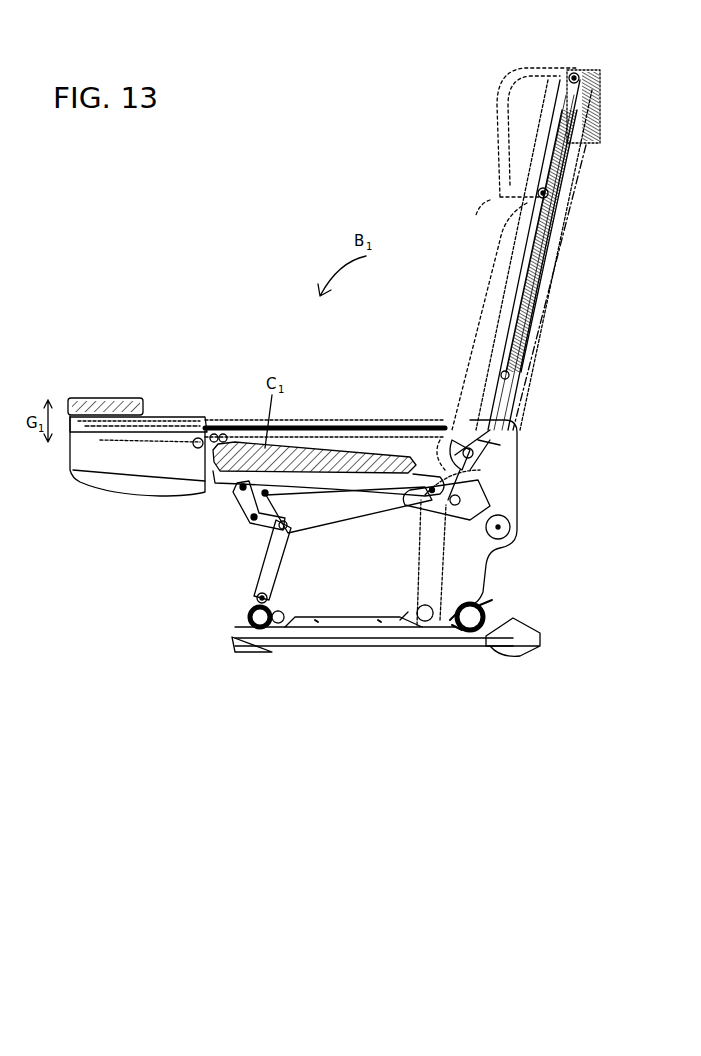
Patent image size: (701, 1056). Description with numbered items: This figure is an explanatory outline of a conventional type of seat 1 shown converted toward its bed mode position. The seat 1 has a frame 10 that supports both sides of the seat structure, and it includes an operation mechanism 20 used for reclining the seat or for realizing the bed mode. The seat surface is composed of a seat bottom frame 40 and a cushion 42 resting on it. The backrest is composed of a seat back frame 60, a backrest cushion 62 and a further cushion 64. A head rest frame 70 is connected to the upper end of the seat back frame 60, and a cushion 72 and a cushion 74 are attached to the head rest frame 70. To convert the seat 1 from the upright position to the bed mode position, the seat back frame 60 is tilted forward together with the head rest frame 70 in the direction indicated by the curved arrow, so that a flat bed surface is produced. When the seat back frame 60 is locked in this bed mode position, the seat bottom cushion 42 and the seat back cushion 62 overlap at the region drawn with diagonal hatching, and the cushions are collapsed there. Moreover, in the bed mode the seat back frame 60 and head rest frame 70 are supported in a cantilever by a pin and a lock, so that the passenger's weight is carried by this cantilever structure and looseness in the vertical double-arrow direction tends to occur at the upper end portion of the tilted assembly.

The seat 1 is at (270, 228).
The frame 10 is at (372, 570).
The operation mechanism 20 is at (517, 494).
The seat bottom frame 40 is at (262, 506).
The cushion 42 is at (242, 492).
The seat back frame 60 is at (518, 292).
The backrest cushion 62 is at (478, 348).
The cushion 64 is at (537, 312).
The head rest frame 70 is at (563, 76).
The cushion 72 is at (524, 146).
The cushion 74 is at (578, 167).